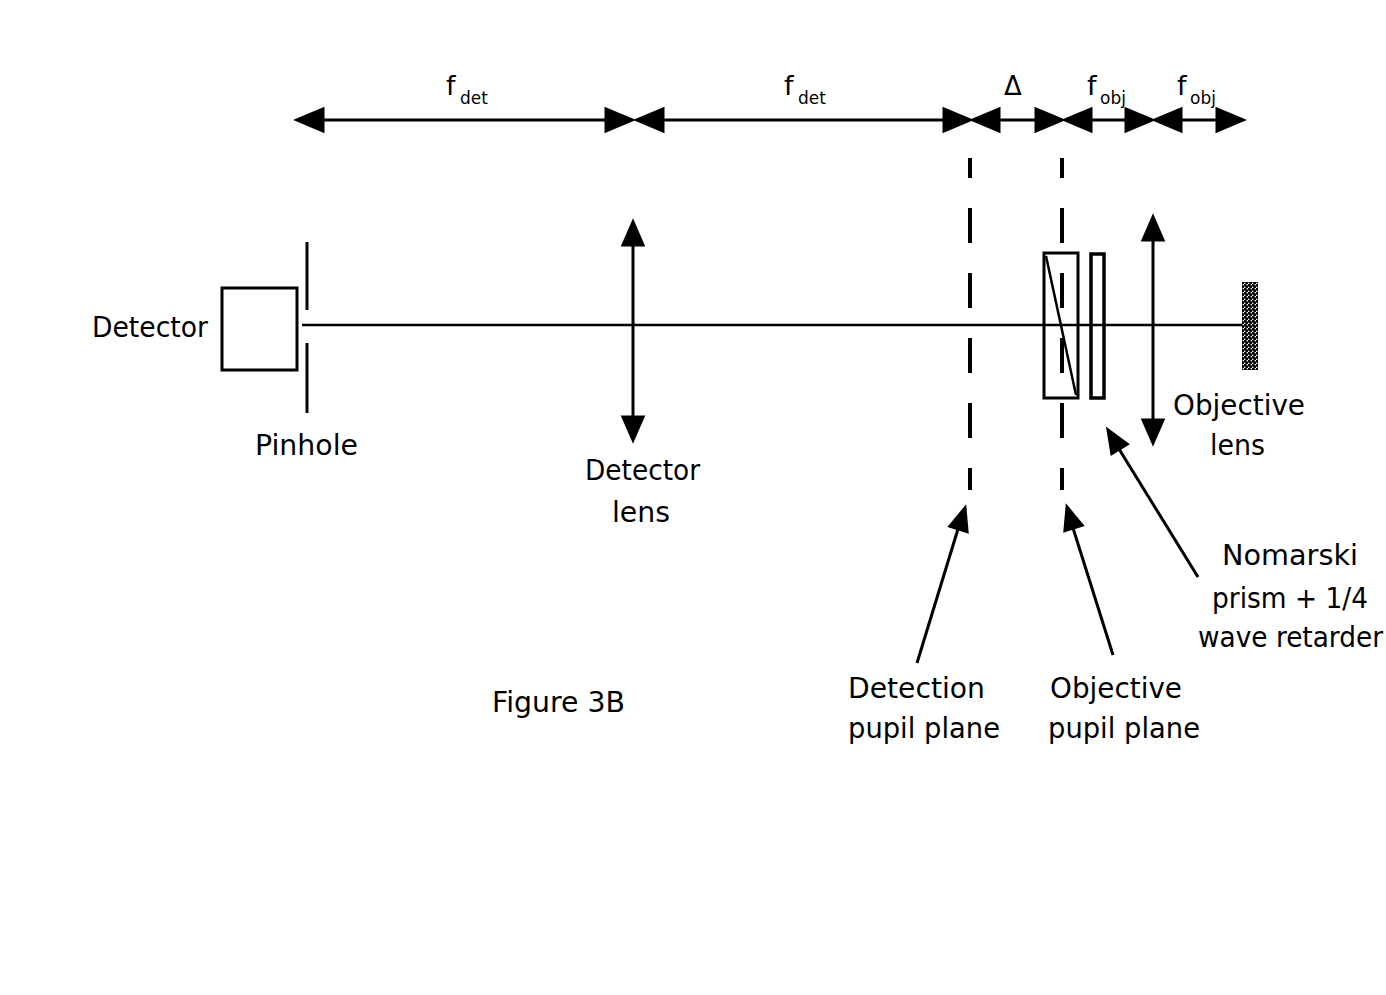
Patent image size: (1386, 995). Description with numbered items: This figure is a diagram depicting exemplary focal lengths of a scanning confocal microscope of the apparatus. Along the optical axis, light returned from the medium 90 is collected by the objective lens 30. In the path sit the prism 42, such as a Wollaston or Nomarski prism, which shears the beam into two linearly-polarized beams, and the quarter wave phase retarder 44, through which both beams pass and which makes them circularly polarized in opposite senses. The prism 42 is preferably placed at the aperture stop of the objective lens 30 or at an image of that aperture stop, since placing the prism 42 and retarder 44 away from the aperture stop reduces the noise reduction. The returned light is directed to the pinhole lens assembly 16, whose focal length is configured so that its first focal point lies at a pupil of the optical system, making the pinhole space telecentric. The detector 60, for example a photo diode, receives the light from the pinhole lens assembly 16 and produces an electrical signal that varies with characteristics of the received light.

The detector 60 is at (210, 302).
The pinhole lens assembly 16 is at (447, 555).
The prism 42 is at (1042, 340).
The quarter wave phase retarder 44 is at (1093, 252).
The objective lens 30 is at (1163, 297).
The medium 90 is at (1262, 330).